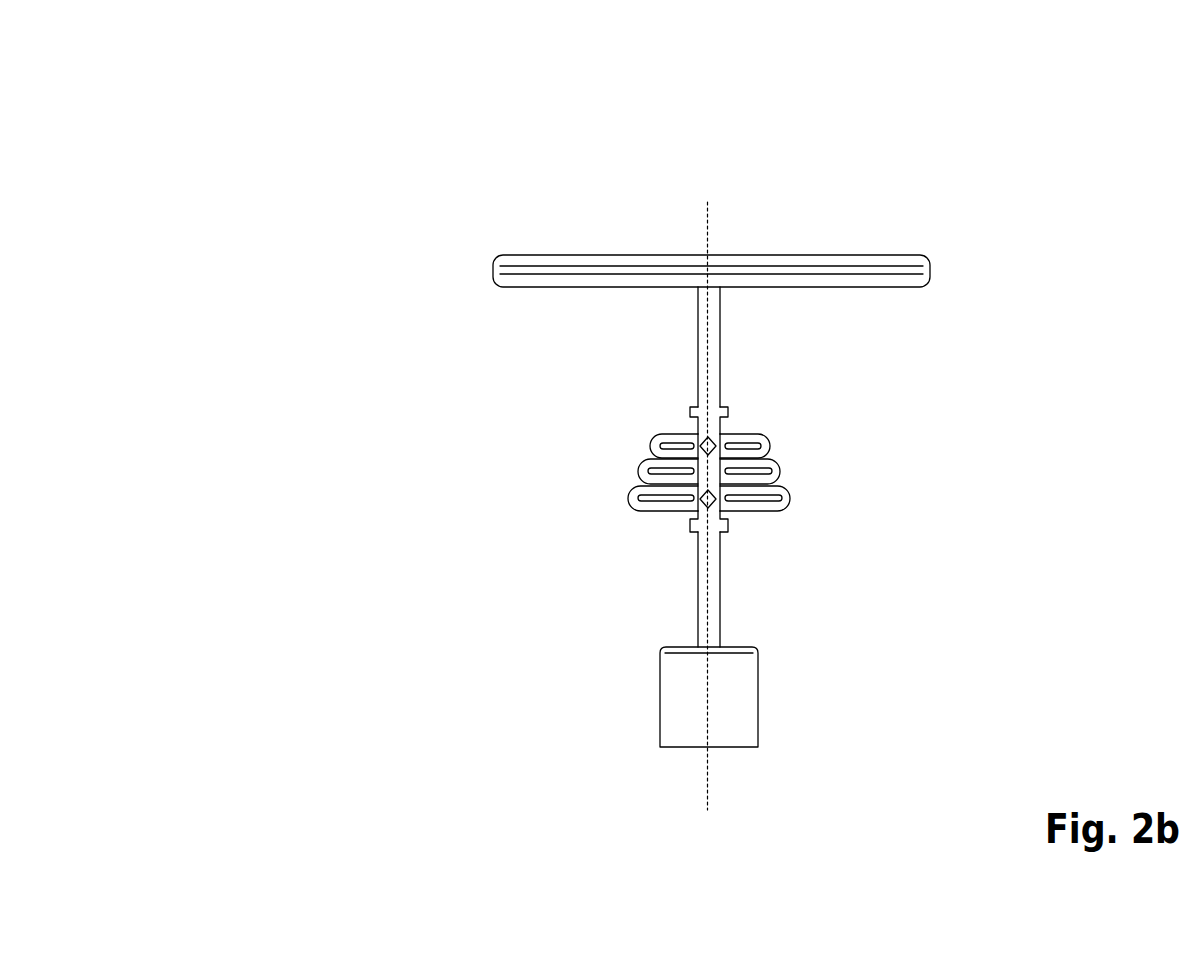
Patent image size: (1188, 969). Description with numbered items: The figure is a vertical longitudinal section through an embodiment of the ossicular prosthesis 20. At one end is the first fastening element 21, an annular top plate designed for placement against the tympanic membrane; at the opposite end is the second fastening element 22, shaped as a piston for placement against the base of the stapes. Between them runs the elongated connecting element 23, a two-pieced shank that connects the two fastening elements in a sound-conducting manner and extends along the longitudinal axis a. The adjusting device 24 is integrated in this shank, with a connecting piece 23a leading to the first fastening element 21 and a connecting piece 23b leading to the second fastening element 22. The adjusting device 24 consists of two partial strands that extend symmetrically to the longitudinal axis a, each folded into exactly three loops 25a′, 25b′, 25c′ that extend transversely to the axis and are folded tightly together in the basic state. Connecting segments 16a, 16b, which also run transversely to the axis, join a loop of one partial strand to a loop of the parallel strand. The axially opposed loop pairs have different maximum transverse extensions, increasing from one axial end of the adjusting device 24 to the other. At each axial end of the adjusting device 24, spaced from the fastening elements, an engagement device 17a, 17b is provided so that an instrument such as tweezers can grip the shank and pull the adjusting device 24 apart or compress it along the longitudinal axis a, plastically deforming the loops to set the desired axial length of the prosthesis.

The ossicular prosthesis 20 is at (320, 123).
The first fastening element 21 is at (512, 256).
The second fastening element 22 is at (678, 712).
The elongated connecting element 23 is at (222, 323).
The connecting piece 23a is at (700, 343).
The connecting piece 23b is at (700, 593).
The engagement device 17a is at (690, 410).
The engagement device 17b is at (697, 531).
The adjusting device 24 is at (435, 413).
The loop 25a′ is at (650, 445).
The loop 25b′ is at (638, 469).
The loop 25c′ is at (628, 497).
The connecting segment 16a is at (710, 457).
The connecting segment 16b is at (706, 490).
The longitudinal axis a is at (705, 781).